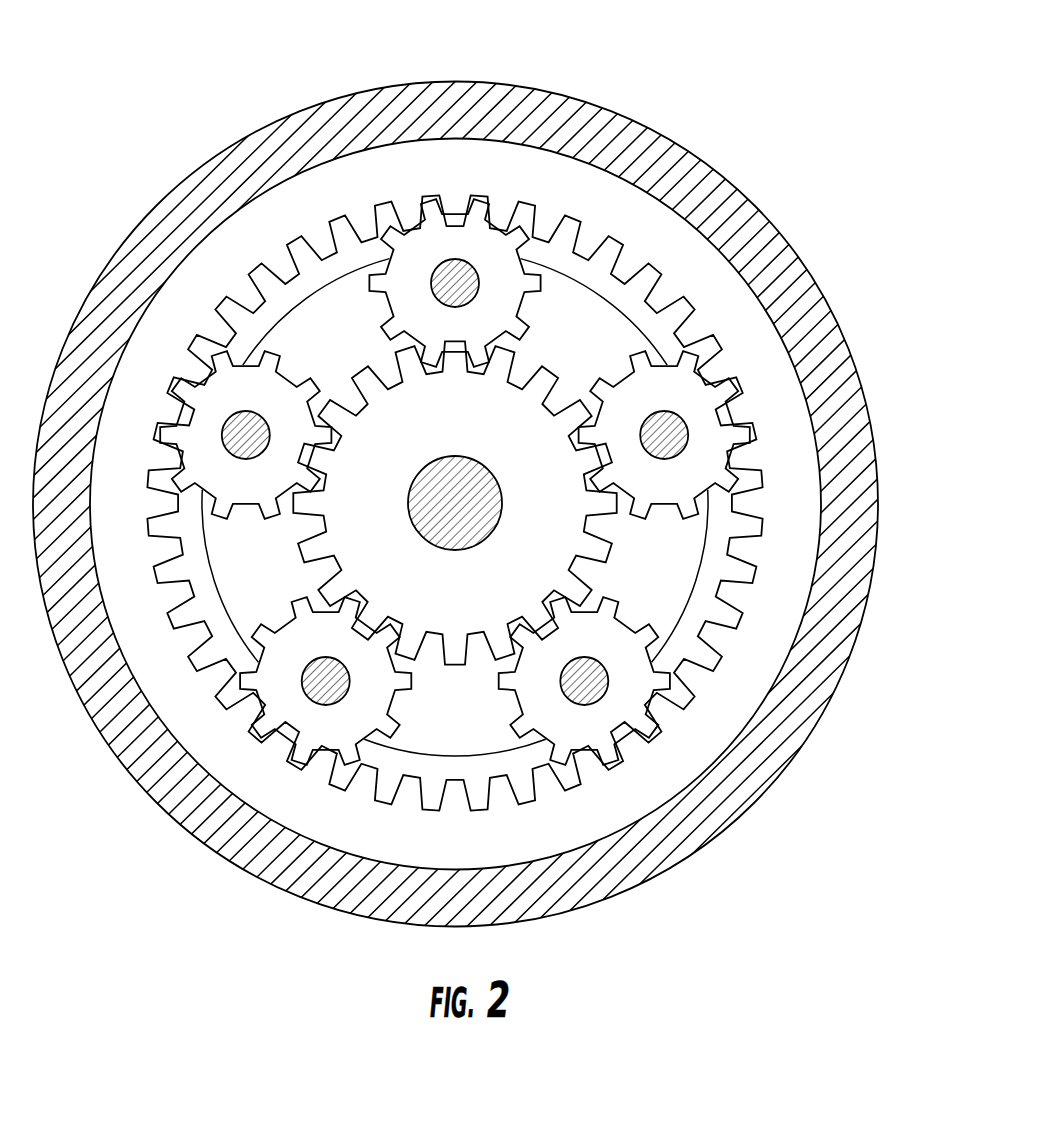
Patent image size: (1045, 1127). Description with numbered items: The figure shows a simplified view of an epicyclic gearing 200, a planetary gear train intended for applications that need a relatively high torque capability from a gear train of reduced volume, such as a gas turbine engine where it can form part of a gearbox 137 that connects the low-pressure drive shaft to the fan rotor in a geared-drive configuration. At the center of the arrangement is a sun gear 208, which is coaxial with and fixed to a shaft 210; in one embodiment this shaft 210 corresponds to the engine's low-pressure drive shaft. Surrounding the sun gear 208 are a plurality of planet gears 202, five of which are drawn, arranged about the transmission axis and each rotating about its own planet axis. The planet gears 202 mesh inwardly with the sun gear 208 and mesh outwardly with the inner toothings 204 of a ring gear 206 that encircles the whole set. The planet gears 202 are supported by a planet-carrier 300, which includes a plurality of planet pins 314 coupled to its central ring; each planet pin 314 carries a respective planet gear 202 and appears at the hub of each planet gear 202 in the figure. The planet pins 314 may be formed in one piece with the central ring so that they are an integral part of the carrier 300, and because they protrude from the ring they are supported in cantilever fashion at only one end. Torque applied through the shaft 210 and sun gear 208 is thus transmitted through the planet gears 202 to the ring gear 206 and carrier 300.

The epicyclic gearing 200 is at (822, 90).
The gearbox 137 is at (822, 368).
The ring gear 206 is at (782, 490).
The inner toothings 204 is at (212, 327).
The planet-carrier 300 is at (675, 570).
The sun gear 208 is at (552, 541).
The shaft 210 is at (465, 470).
The planet gears 202 is at (473, 338).
The planet pins 314 is at (440, 266).